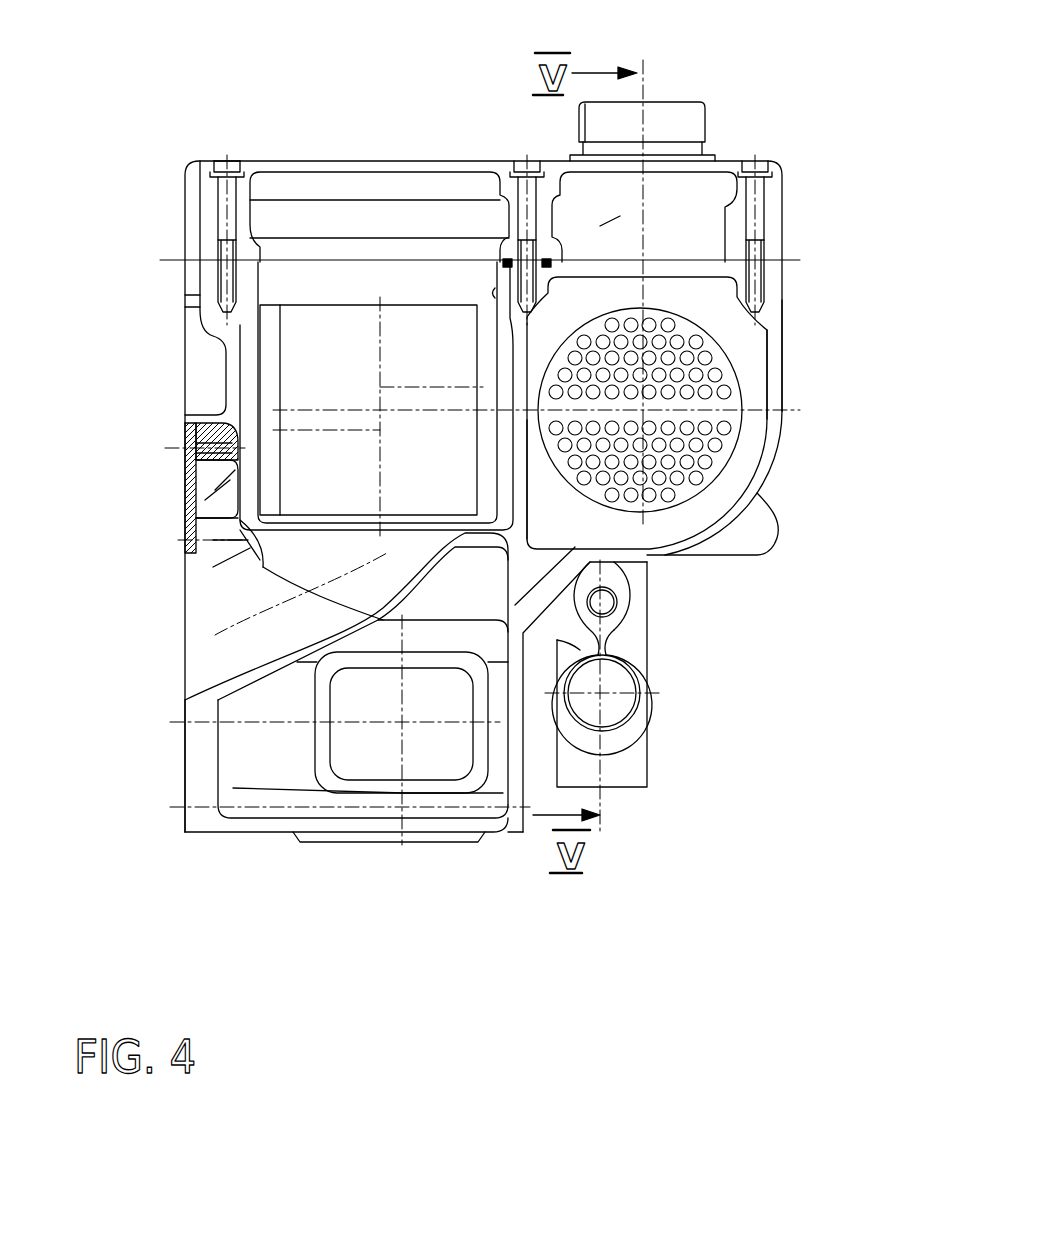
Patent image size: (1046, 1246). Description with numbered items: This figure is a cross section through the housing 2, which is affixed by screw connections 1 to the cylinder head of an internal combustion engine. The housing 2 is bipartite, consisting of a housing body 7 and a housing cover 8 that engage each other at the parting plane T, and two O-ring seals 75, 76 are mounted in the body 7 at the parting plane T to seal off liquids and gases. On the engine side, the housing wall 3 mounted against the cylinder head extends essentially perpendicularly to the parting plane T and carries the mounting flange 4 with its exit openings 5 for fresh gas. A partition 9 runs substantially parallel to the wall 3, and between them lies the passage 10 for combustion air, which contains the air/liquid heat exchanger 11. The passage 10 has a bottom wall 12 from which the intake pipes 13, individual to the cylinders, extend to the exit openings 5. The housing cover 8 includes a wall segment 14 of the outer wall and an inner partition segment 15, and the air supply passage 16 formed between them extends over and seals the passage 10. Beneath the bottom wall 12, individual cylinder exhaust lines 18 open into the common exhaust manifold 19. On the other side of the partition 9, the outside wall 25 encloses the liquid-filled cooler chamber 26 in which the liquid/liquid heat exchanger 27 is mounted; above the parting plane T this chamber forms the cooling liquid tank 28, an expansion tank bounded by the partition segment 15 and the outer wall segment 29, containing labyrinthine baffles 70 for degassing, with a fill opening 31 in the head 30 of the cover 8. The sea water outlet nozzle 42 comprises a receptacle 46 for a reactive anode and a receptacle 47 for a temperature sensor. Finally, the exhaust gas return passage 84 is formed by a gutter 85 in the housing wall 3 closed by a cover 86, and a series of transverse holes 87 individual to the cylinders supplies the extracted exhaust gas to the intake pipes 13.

The screw connections 1 is at (488, 803).
The housing 2 is at (810, 247).
The housing wall 3 is at (237, 385).
The mounting flange 4 is at (165, 785).
The exit openings 5 is at (185, 678).
The housing body 7 is at (790, 377).
The housing cover 8 is at (182, 212).
The partition 9 is at (523, 500).
The passage 10 is at (228, 180).
The air/liquid heat exchanger 11 is at (270, 388).
The bottom wall 12 is at (487, 538).
The intake pipes 13 is at (213, 620).
The wall segment 14 is at (208, 203).
The partition segment 15 is at (537, 165).
The air supply passage 16 is at (318, 222).
The cylinder exhaust lines 18 is at (288, 765).
The exhaust manifold 19 is at (385, 753).
The outside wall 25 is at (767, 448).
The cooler chamber 26 is at (755, 355).
The liquid/liquid heat exchanger 27 is at (720, 402).
The cooling liquid tank 28 is at (593, 237).
The outer wall segment 29 is at (773, 203).
The head 30 is at (377, 167).
The fill opening 31 is at (657, 117).
The sea water outlet nozzle 42 is at (633, 628).
The receptacle for a reactive anode 46 is at (633, 790).
The receptacle for a temperature sensor 47 is at (610, 602).
The labyrinthine baffles 70 is at (708, 190).
The O-ring seal 75 is at (507, 259).
The O-ring seal 76 is at (546, 259).
The exhaust gas return passage 84 is at (188, 448).
The gutter 85 is at (207, 477).
The cover 86 is at (192, 517).
The transverse holes 87 is at (232, 555).
The parting plane T is at (173, 260).